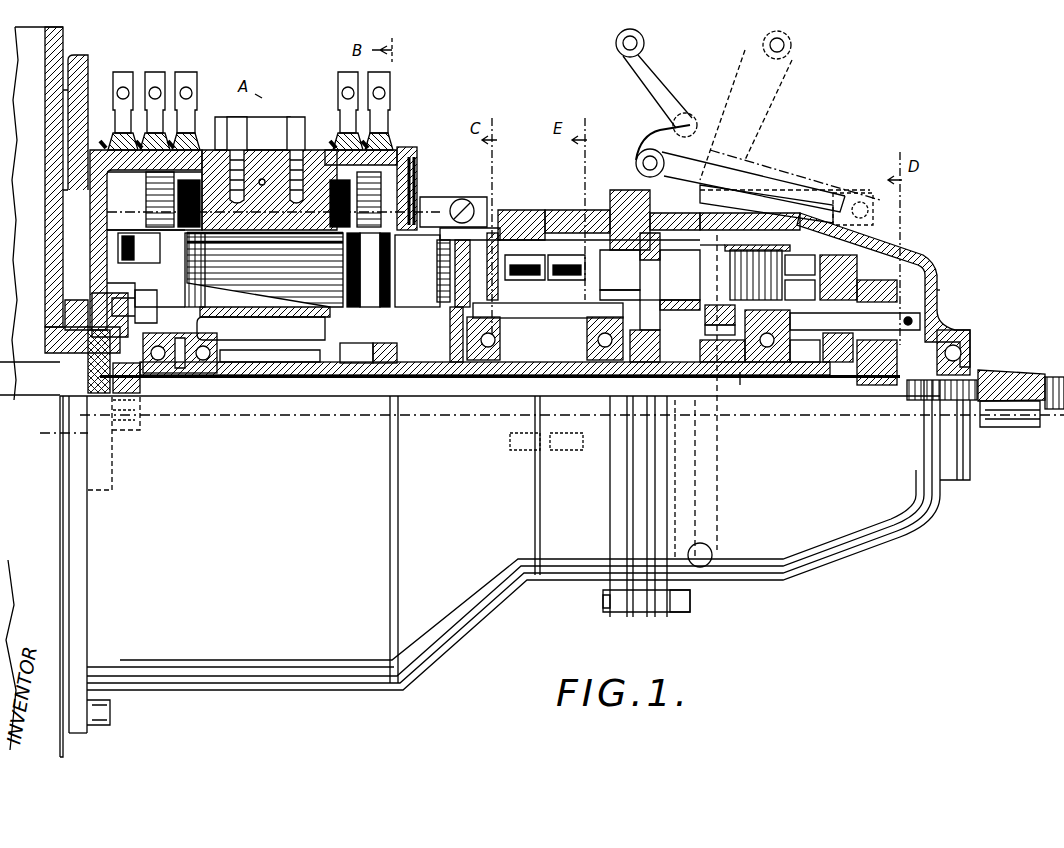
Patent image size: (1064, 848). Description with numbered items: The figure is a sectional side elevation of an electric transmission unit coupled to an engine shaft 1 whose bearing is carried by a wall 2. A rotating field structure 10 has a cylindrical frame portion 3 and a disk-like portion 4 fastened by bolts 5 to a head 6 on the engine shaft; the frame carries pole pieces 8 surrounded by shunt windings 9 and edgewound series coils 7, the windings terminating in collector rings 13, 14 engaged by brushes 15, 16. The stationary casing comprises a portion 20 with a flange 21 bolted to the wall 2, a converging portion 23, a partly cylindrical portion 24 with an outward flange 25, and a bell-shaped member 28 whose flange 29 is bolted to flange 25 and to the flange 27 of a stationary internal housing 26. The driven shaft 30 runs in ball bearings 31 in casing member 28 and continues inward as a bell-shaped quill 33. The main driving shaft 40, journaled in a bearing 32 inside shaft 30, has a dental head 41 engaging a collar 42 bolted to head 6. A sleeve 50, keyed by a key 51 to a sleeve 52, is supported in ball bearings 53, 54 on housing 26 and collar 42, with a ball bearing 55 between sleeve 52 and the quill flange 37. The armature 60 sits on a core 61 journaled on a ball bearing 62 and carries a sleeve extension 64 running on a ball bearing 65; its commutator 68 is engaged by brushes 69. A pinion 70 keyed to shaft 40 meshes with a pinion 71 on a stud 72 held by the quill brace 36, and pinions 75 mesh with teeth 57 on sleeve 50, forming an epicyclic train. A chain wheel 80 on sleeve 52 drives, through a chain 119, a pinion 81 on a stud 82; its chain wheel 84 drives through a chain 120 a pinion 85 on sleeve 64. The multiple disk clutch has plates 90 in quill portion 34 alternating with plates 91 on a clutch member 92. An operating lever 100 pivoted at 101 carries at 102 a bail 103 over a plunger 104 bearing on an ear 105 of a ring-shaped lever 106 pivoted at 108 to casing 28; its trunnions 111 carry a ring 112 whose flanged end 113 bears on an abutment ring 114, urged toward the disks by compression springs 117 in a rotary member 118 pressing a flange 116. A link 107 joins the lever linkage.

The shaft of internal combustion engine 1 is at (30, 378).
The wall 2 is at (45, 205).
The cylindrical portion of field frame 3 is at (418, 158).
The disk-like portion 4 is at (90, 215).
The bolts 5 is at (157, 310).
The head 6 is at (88, 310).
The edgewound series coils 7 is at (147, 178).
The pole pieces 8 is at (266, 160).
The shunt windings 9 is at (146, 190).
The rotating field structure 10 is at (270, 118).
The collector ring 13 is at (115, 138).
The collector ring 14 is at (393, 148).
The brush 15 is at (197, 112).
The brush 16 is at (340, 100).
The casing portion 20 is at (184, 576).
The flange 21 is at (88, 610).
The converging portion 23 is at (425, 539).
The partly cylindrical portion 24 is at (558, 485).
The outward flange 25 is at (605, 538).
The stationary internal frame or housing 26 is at (543, 301).
The flange 27 is at (628, 190).
The casing member 28 is at (912, 258).
The flange 29 is at (660, 615).
The driven shaft 30 is at (982, 372).
The ball bearings 31 is at (962, 350).
The bearing 32 is at (1053, 382).
The bell-shaped quill 33 is at (940, 285).
The portion of quill 34 is at (763, 240).
The transverse internal brace 36 is at (800, 288).
The interior flange of quill 37 is at (800, 265).
The main driving shaft 40 is at (256, 383).
The dental head 41 is at (89, 62).
The collar 42 is at (140, 378).
The sleeve 50 is at (740, 368).
The key 51 is at (750, 368).
The sleeve 52 is at (405, 380).
The ball bearing 53 is at (645, 346).
The ball bearing 54 is at (180, 372).
The ball bearing 55 is at (790, 372).
The teeth 57 is at (850, 370).
The armature 60 is at (254, 270).
The core 61 is at (312, 328).
The ball bearing 62 is at (270, 355).
The sleeve extension 64 is at (384, 352).
The ball bearing 65 is at (405, 333).
The commutator 68 is at (437, 258).
The brushes 69 is at (488, 204).
The pinion 70 is at (900, 400).
The pinion 71 is at (877, 324).
The stud 72 is at (912, 318).
The pinions 75 is at (838, 268).
The chain wheel 80 is at (585, 365).
The pinion 81 is at (553, 200).
The stud 82 is at (548, 307).
The chain wheel 84 is at (479, 229).
The pinion 85 is at (505, 365).
The clutch plates 90 is at (756, 265).
The clutch plates 91 is at (720, 315).
The rotary support or clutch member 92 is at (720, 330).
The operating lever 100 is at (660, 90).
The pivot 101 is at (740, 165).
The connection 102 is at (645, 150).
The bail 103 is at (766, 204).
The plunger 104 is at (860, 190).
The ear 105 is at (695, 215).
The ring-shaped lever 106 is at (726, 496).
The link 107 is at (790, 175).
The pivot 108 is at (712, 552).
The trunnions 111 is at (712, 400).
The ring 112 is at (684, 275).
The flanged end 113 is at (632, 244).
The abutment ring 114 is at (620, 285).
The flange 116 is at (689, 297).
The compression springs 117 is at (652, 319).
The rotary member 118 is at (742, 385).
The chain 119 is at (567, 255).
The chain 120 is at (505, 470).